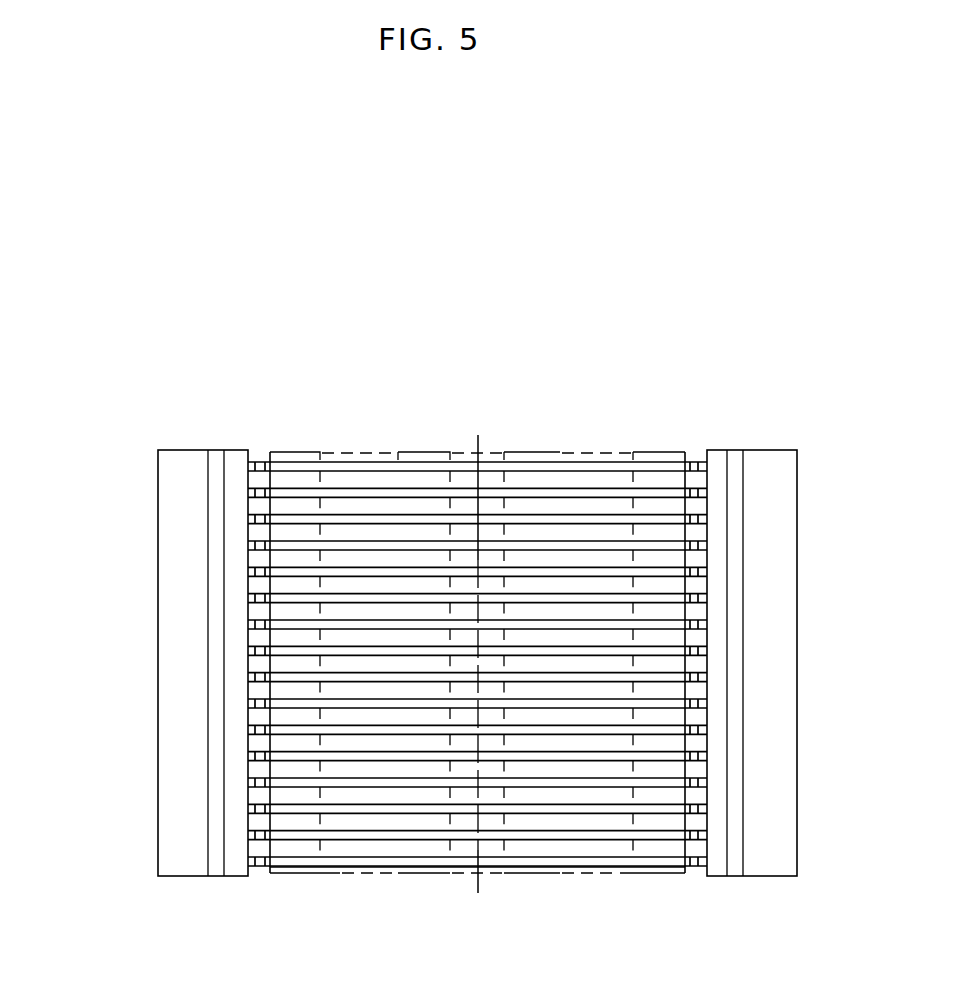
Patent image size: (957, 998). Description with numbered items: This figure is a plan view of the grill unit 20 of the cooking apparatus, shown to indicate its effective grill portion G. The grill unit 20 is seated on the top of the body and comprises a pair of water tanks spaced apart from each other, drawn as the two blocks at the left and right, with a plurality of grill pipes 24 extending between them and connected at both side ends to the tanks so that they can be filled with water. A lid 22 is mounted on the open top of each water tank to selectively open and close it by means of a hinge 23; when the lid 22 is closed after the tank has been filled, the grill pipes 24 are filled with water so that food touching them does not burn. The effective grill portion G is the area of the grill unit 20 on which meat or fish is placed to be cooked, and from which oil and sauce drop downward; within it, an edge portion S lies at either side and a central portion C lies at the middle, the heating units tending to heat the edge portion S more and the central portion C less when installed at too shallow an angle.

The grill unit 20 is at (142, 639).
The lid 22 is at (161, 463).
The hinge 23 is at (236, 455).
The grill pipes 24 is at (395, 862).
The edge portion S is at (298, 455).
The effective grill portion G is at (404, 446).
The central portion C is at (490, 456).